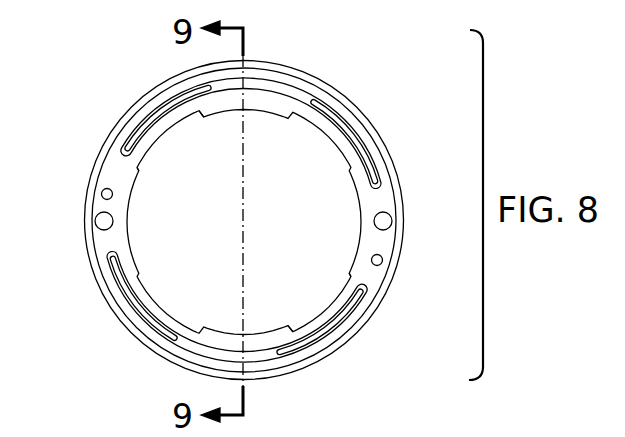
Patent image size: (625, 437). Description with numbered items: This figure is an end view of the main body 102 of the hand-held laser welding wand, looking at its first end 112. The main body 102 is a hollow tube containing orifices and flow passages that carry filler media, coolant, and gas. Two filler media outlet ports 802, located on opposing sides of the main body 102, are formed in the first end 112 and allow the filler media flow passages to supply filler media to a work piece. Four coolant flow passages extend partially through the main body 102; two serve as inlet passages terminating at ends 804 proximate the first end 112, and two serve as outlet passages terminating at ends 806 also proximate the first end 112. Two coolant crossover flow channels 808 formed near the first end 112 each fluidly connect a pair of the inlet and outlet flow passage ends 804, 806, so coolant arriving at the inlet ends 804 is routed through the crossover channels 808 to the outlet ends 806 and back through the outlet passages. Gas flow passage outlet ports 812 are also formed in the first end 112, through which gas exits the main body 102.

The main body 102 is at (144, 77).
The first end 112 is at (255, 68).
The outlet port 802 is at (100, 222).
The end 804 is at (190, 99).
The end 806 is at (373, 168).
The coolant crossover flow channel 808 is at (297, 91).
The outlet port 812 is at (147, 130).